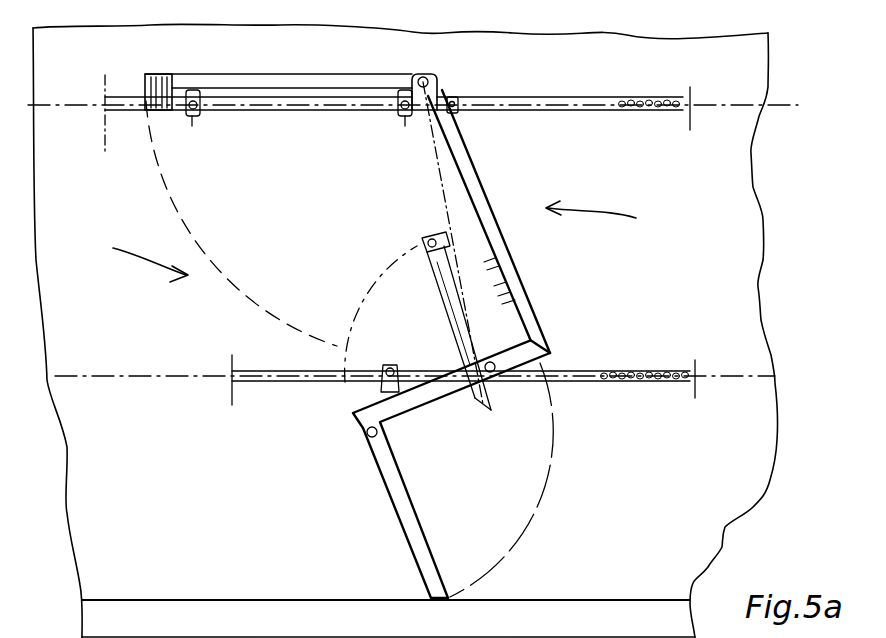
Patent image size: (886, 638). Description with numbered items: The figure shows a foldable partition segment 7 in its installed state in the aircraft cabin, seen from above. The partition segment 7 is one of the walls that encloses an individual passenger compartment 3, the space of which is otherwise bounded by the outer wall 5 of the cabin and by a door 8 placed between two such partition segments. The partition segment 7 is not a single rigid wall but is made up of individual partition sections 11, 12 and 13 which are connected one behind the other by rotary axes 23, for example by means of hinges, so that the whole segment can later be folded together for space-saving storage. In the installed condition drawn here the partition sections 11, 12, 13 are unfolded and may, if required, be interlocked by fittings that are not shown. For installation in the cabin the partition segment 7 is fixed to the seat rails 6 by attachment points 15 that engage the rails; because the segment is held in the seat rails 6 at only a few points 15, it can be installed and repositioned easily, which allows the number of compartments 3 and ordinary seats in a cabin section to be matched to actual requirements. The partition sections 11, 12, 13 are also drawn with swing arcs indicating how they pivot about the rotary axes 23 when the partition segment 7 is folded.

The compartment 3 is at (132, 254).
The outer wall 5 is at (533, 620).
The seat rails 6 is at (588, 100).
The partition segment 7 is at (601, 220).
The door 8 is at (156, 75).
The partition section 11 is at (253, 78).
The partition section 12 is at (473, 177).
The partition section 13 is at (385, 476).
The attachment points 15 is at (200, 114).
The rotary axes 23 is at (424, 76).